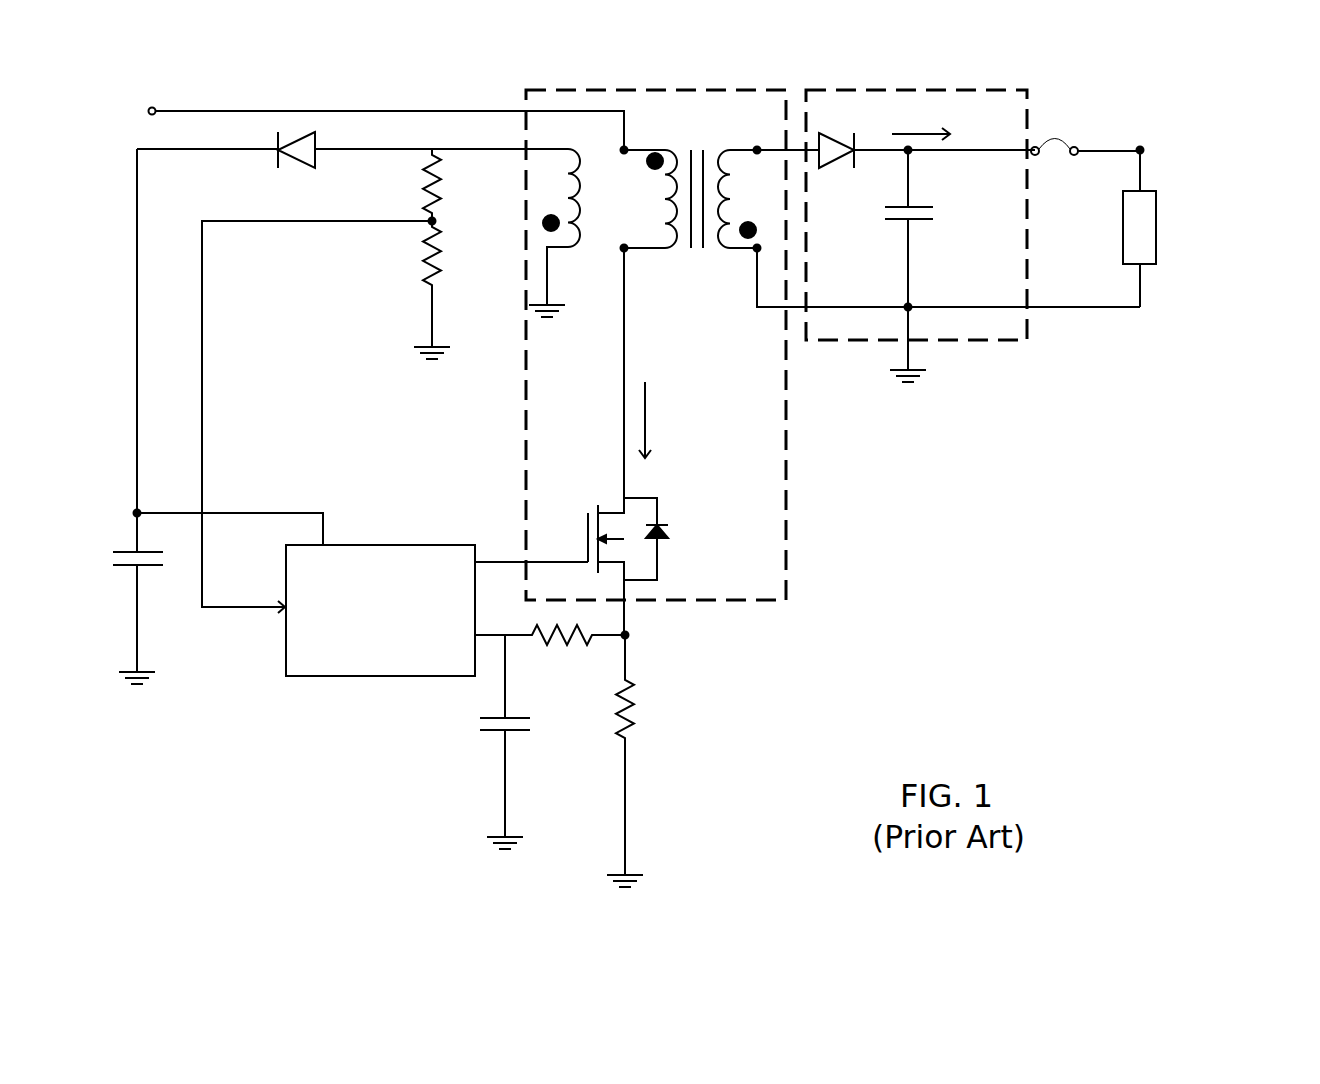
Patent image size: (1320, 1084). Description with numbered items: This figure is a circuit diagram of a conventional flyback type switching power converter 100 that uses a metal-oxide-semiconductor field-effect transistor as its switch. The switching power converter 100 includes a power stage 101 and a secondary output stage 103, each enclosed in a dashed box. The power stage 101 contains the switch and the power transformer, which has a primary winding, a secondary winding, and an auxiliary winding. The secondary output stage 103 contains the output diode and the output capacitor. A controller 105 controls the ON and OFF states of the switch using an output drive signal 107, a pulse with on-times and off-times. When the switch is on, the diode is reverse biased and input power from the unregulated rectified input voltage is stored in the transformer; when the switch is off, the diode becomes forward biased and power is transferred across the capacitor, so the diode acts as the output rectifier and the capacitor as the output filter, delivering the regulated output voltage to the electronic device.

The switching power converter 100 is at (697, 447).
The power stage 101 is at (523, 92).
The secondary output stage 103 is at (806, 92).
The controller 105 is at (382, 545).
The output drive signal 107 is at (567, 563).